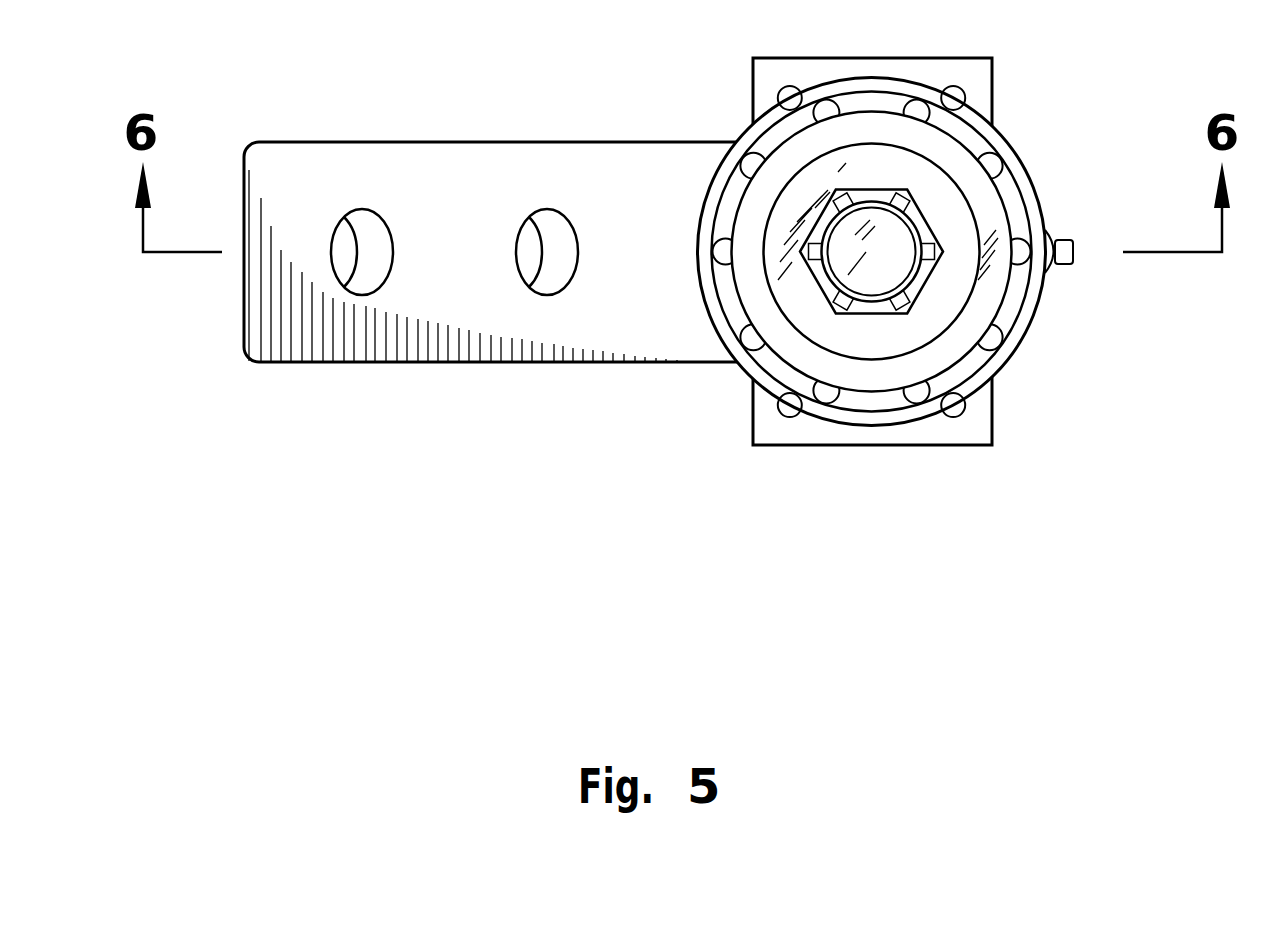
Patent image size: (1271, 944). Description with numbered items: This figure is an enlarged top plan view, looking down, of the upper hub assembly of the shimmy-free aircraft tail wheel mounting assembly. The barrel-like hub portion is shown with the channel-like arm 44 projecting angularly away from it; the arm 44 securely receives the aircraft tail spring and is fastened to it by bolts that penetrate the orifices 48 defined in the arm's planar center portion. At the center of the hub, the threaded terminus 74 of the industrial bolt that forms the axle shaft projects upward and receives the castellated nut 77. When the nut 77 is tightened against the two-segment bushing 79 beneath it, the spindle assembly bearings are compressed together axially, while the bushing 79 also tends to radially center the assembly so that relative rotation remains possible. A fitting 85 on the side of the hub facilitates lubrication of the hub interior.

The channel-like arm 44 is at (345, 363).
The orifices 48 is at (532, 253).
The threaded terminus 74 is at (895, 260).
The castellated nut 77 is at (913, 215).
The two-segment bushing 79 is at (872, 338).
The fitting 85 is at (1073, 265).